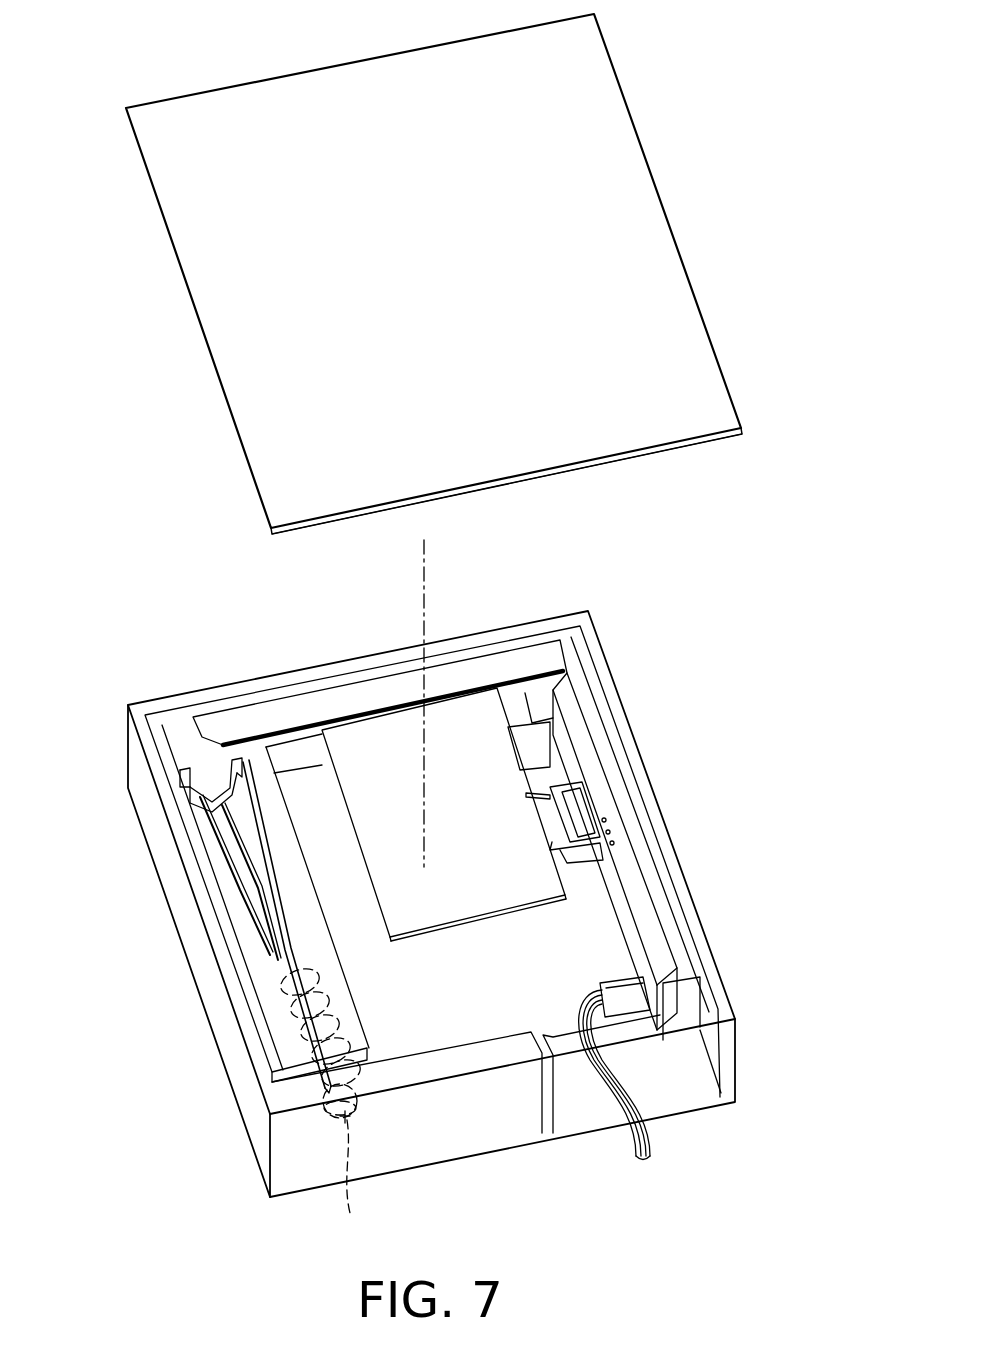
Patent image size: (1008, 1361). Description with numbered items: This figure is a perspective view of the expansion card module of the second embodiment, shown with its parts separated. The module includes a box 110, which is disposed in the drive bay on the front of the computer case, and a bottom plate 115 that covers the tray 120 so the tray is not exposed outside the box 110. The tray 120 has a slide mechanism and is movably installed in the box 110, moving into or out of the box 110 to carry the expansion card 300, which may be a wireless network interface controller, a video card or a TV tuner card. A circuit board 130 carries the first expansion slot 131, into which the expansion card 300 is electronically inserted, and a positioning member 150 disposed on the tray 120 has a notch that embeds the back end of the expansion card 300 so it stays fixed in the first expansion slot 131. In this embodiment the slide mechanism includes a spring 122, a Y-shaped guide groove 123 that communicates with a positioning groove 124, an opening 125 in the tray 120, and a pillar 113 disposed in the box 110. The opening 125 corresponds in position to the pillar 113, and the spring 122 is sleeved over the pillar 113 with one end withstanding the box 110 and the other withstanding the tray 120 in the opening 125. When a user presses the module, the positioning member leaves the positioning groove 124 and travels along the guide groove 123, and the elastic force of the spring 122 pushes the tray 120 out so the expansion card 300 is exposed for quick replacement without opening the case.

The box 110 is at (742, 950).
The pillar 113 is at (374, 1183).
The bottom plate 115 is at (350, 74).
The tray 120 is at (543, 1008).
The spring 122 is at (318, 1100).
The guide groove 123 is at (252, 825).
The positioning groove 124 is at (193, 787).
The opening 125 is at (290, 1030).
The circuit board 130 is at (563, 747).
The first expansion slot 131 is at (580, 817).
The positioning member 150 is at (277, 952).
The expansion card 300 is at (387, 740).